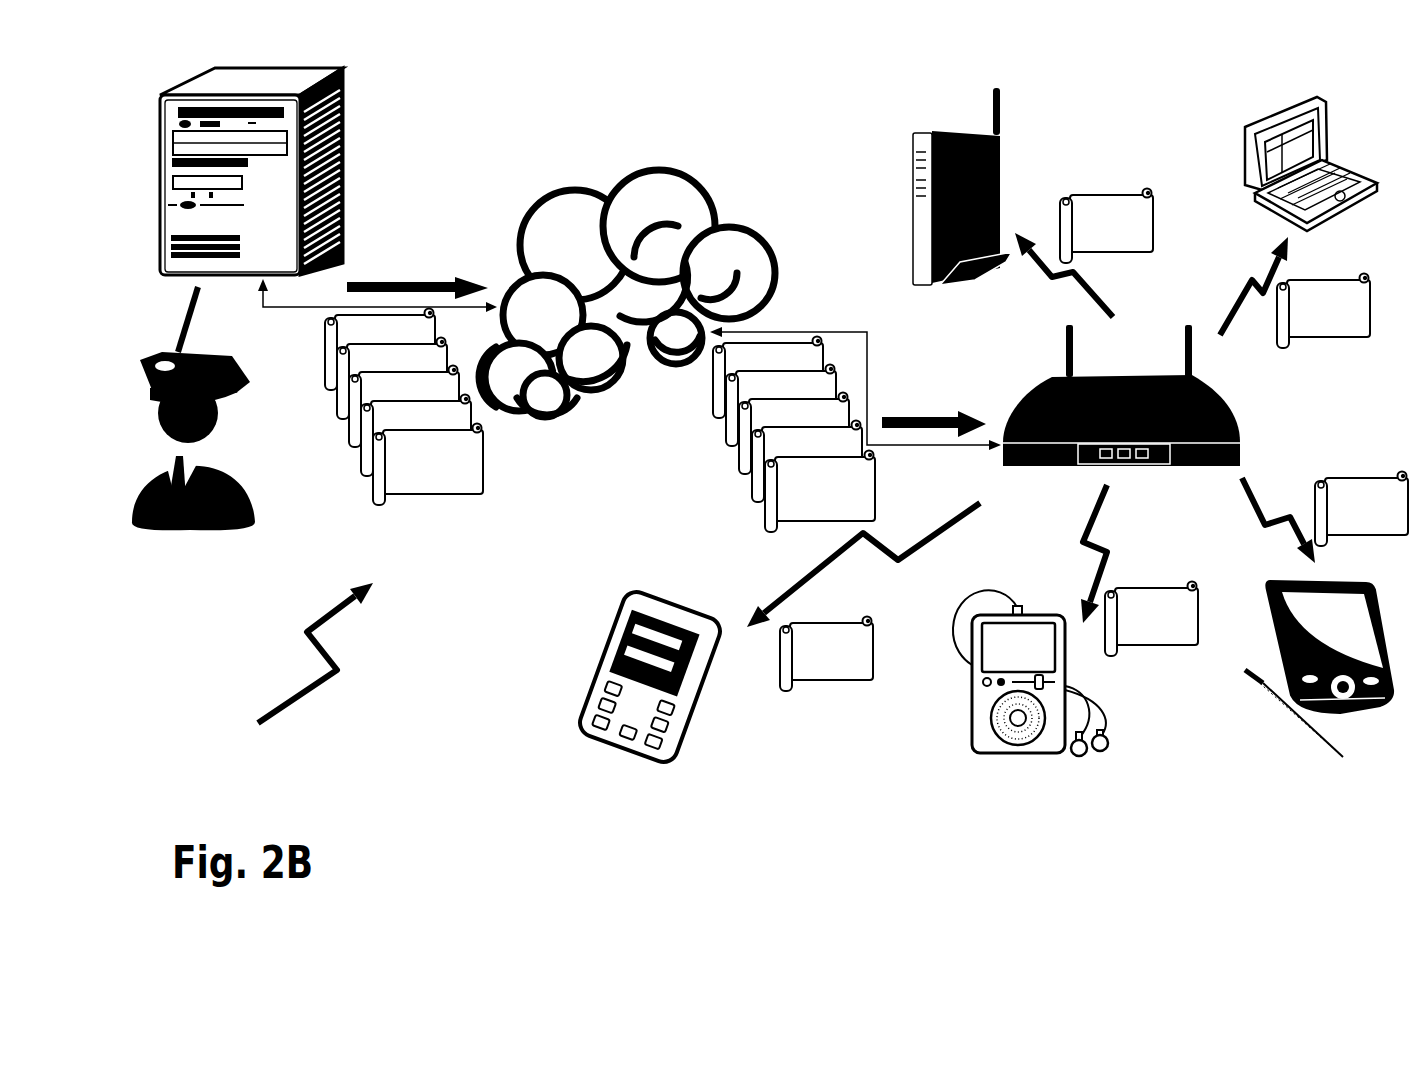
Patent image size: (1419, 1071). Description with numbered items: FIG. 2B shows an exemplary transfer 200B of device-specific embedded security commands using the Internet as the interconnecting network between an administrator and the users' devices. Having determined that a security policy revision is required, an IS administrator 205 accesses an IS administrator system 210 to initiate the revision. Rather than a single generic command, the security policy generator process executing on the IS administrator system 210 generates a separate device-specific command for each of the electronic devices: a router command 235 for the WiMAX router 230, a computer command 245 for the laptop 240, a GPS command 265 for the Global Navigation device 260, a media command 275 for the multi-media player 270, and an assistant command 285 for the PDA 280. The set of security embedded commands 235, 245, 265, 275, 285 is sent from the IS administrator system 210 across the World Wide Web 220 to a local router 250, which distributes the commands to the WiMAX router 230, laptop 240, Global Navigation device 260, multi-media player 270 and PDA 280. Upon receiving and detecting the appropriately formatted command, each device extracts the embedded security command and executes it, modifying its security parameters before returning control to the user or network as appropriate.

The exemplary transfer 200B is at (280, 677).
The IS administrator 205 is at (215, 408).
The IS administrator system 210 is at (281, 171).
The World Wide Web 220 is at (620, 293).
The WiMAX router 230 is at (937, 186).
The router command 235 is at (763, 361).
The laptop 240 is at (1280, 164).
The computer command 245 is at (865, 388).
The local router 250 is at (1155, 395).
The Global Navigation device 260 is at (611, 677).
The GPS command 265 is at (611, 529).
The multi-media player 270 is at (1006, 673).
The media command 275 is at (767, 497).
The PDA 280 is at (1307, 669).
The assistant command 285 is at (866, 428).